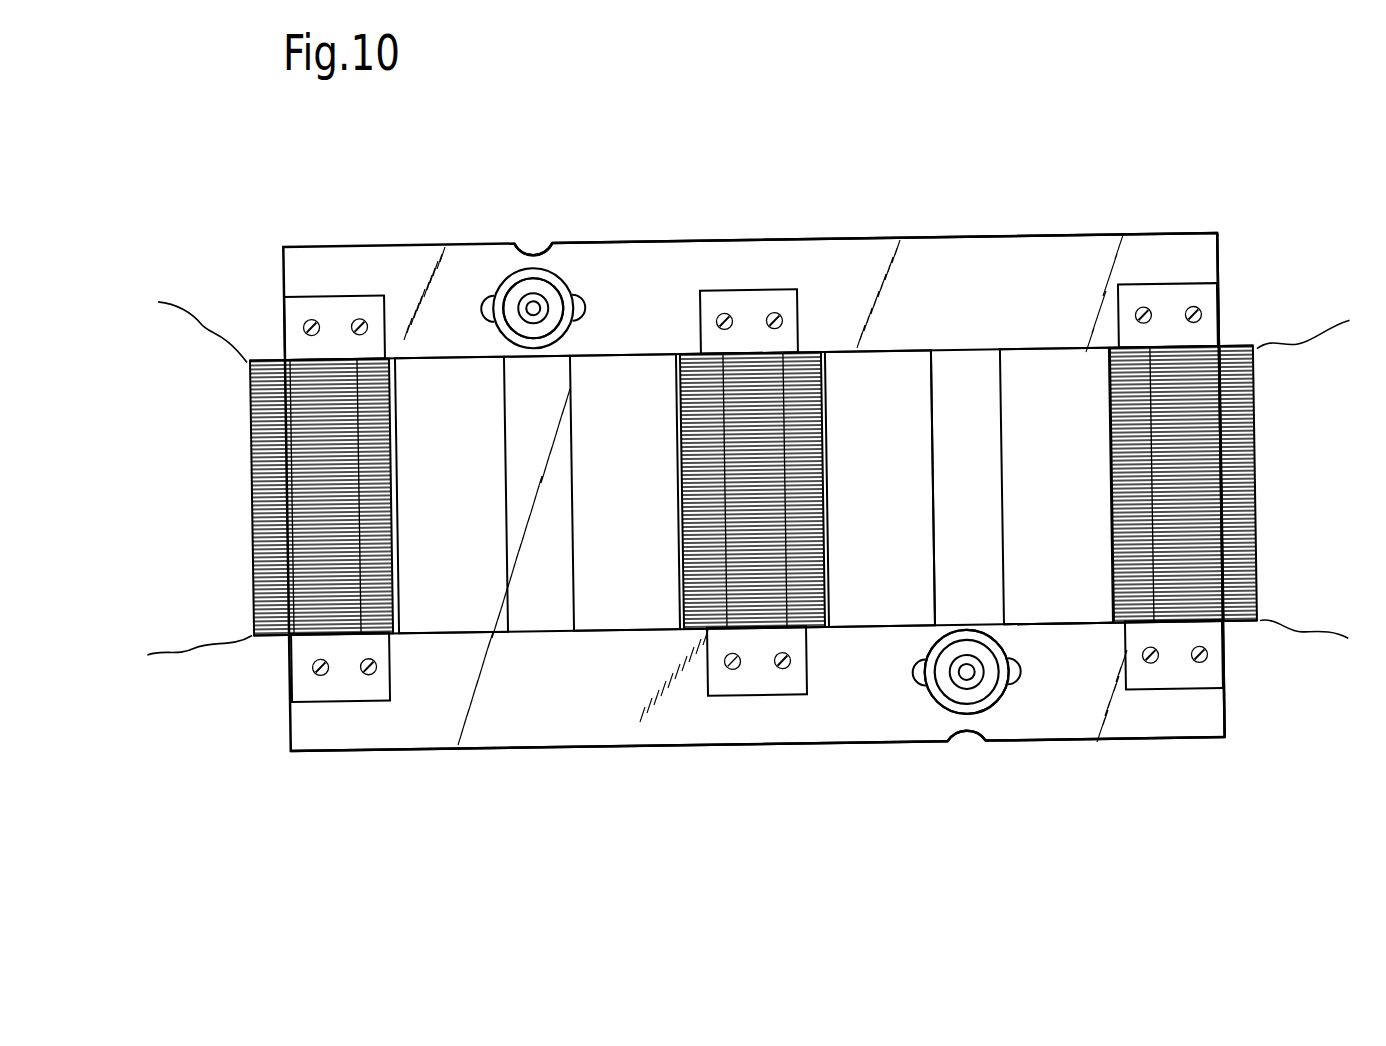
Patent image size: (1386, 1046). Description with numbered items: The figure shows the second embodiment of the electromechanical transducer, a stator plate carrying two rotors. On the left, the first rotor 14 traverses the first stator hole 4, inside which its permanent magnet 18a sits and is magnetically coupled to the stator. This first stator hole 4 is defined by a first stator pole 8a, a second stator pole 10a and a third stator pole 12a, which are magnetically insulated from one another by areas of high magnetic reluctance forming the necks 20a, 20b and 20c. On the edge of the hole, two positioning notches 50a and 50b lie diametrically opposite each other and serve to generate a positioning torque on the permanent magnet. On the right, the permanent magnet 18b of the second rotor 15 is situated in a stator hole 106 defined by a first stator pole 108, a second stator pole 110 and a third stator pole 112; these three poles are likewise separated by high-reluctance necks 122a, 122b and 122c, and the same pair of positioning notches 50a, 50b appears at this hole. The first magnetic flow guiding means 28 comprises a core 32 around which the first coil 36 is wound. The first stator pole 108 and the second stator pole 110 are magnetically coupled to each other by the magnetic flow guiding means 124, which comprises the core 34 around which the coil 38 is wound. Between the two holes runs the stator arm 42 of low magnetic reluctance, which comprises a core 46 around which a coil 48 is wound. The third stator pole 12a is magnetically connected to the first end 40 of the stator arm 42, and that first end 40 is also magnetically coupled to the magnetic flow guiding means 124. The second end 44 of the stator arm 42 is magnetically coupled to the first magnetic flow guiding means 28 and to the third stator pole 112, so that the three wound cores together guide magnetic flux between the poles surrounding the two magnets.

The first magnetic flow guiding means 28 is at (267, 273).
The third stator pole 12a is at (612, 300).
The first stator pole 8a is at (450, 318).
The first end of stator arm 40 is at (750, 323).
The second end of stator arm 44 is at (755, 672).
The stator arm 42 is at (715, 643).
The first rotor 14 is at (512, 288).
The permanent magnet 18a is at (550, 316).
The first stator hole 4 is at (493, 333).
The positioning notch 50a is at (483, 297).
The positioning notch 50b is at (585, 290).
The neck 20a is at (537, 240).
The neck 20b is at (498, 367).
The neck 20c is at (583, 372).
The second stator pole 10a is at (532, 382).
The core 32 is at (262, 517).
The first coil 36 is at (263, 608).
The core 46 is at (812, 461).
The coil 48 is at (693, 580).
The neck 122b is at (925, 610).
The second stator pole 110 is at (972, 603).
The neck 122c is at (1010, 612).
The core 34 is at (1257, 453).
The second coil 38 is at (1243, 543).
The second rotor 15 is at (952, 682).
The permanent magnet 18b is at (983, 692).
The first stator pole 108 is at (1030, 688).
The third stator pole 112 is at (903, 697).
The stator hole 106 is at (948, 715).
The neck 122a is at (967, 740).
The magnetic flow guiding means 124 is at (1257, 697).